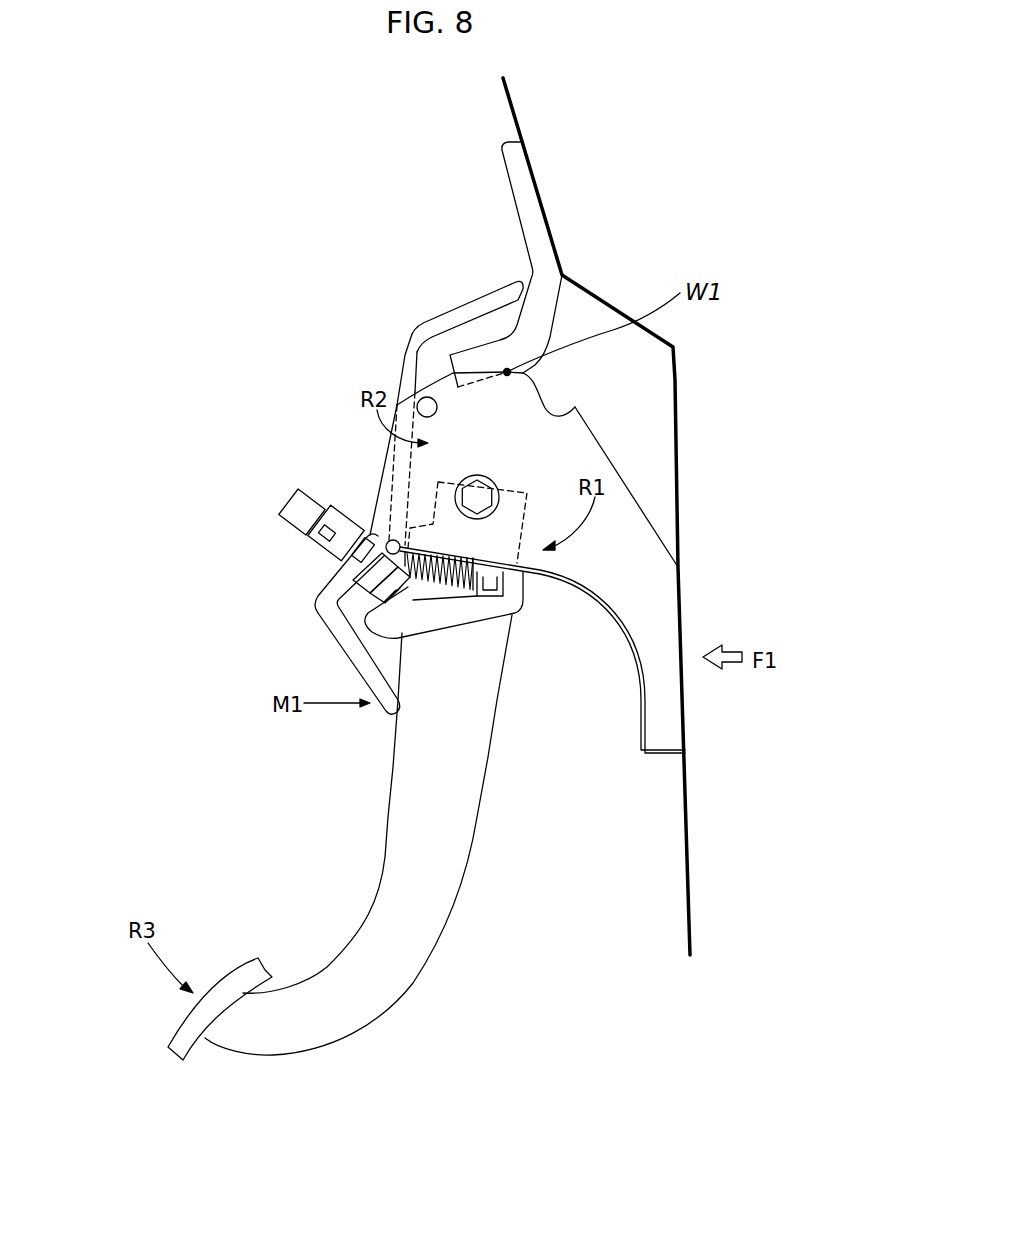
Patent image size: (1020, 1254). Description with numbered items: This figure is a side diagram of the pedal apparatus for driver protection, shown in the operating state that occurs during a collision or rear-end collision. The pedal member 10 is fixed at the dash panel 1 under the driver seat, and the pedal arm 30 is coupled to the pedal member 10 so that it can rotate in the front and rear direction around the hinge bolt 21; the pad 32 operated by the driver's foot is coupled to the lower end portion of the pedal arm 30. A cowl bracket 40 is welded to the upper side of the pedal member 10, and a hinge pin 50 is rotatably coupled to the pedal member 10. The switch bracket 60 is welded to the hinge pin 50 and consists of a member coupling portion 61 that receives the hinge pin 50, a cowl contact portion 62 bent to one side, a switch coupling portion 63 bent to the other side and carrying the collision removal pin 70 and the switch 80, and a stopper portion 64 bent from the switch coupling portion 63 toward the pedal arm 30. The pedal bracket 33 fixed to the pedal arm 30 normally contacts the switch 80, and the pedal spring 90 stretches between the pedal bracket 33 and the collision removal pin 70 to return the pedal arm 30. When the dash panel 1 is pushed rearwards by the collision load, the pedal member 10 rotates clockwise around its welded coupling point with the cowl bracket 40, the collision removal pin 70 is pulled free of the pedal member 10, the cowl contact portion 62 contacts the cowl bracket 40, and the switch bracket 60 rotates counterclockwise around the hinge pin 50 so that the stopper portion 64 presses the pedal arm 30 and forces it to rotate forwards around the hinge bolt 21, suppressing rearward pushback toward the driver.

The dash panel 1 is at (675, 395).
The pedal member 10 is at (637, 537).
The hinge bolt 21 is at (477, 492).
The pedal arm 30 is at (445, 905).
The pad 32 is at (180, 1030).
The pedal bracket 33 is at (415, 623).
The cowl bracket 40 is at (510, 155).
The hinge pin 50 is at (405, 386).
The switch bracket 60 is at (411, 387).
The member coupling portion 61 is at (400, 388).
The cowl contact portion 62 is at (493, 300).
The switch coupling portion 63 is at (333, 580).
The stopper portion 64 is at (342, 642).
The collision removal pin 70 is at (388, 542).
The switch 80 is at (297, 507).
The pedal spring 90 is at (437, 580).